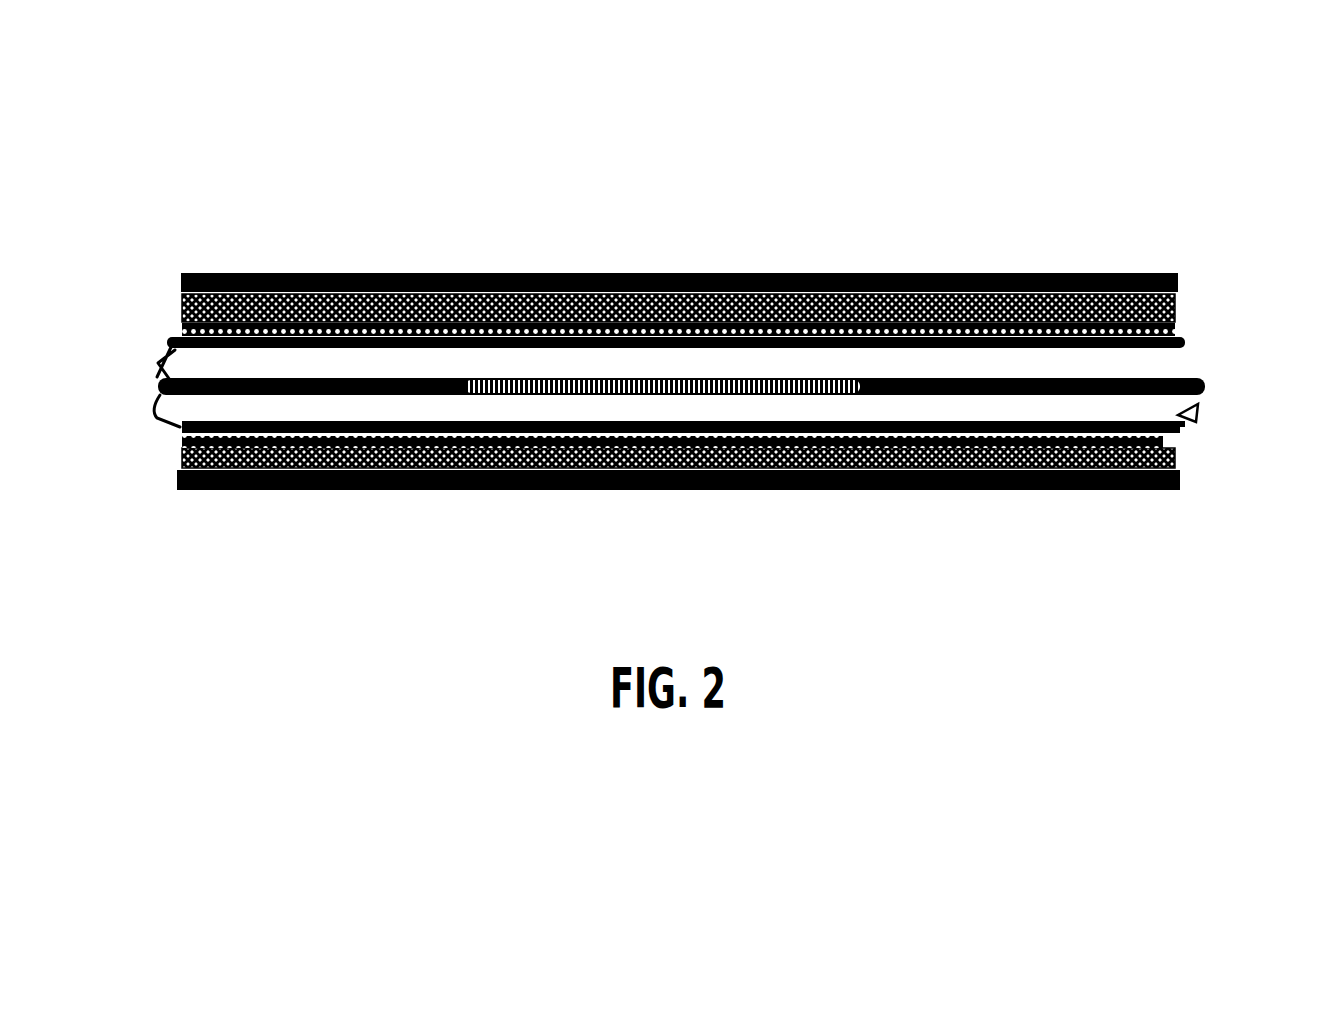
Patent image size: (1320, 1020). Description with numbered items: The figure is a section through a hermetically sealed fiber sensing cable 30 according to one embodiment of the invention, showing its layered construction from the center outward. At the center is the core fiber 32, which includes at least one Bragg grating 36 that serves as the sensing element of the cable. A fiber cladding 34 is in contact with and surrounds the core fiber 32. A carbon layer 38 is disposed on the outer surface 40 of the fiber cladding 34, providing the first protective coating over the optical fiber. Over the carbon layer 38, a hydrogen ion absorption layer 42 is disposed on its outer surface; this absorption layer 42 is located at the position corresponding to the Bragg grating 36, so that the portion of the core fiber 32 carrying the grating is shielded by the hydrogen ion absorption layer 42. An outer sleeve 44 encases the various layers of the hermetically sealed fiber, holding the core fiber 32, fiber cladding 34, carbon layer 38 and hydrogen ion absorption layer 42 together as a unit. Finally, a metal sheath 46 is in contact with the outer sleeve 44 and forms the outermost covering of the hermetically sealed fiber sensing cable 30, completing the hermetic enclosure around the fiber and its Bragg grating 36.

The hermetically sealed fiber sensing cable 30 is at (1195, 158).
The core fiber 32 is at (927, 385).
The fiber cladding 34 is at (982, 405).
The Bragg grating 36 is at (563, 387).
The carbon layer 38 is at (343, 340).
The outer surface 40 is at (795, 433).
The hydrogen ion absorption layer 42 is at (687, 436).
The outer sleeve 44 is at (158, 363).
The metal sheath 46 is at (1182, 288).